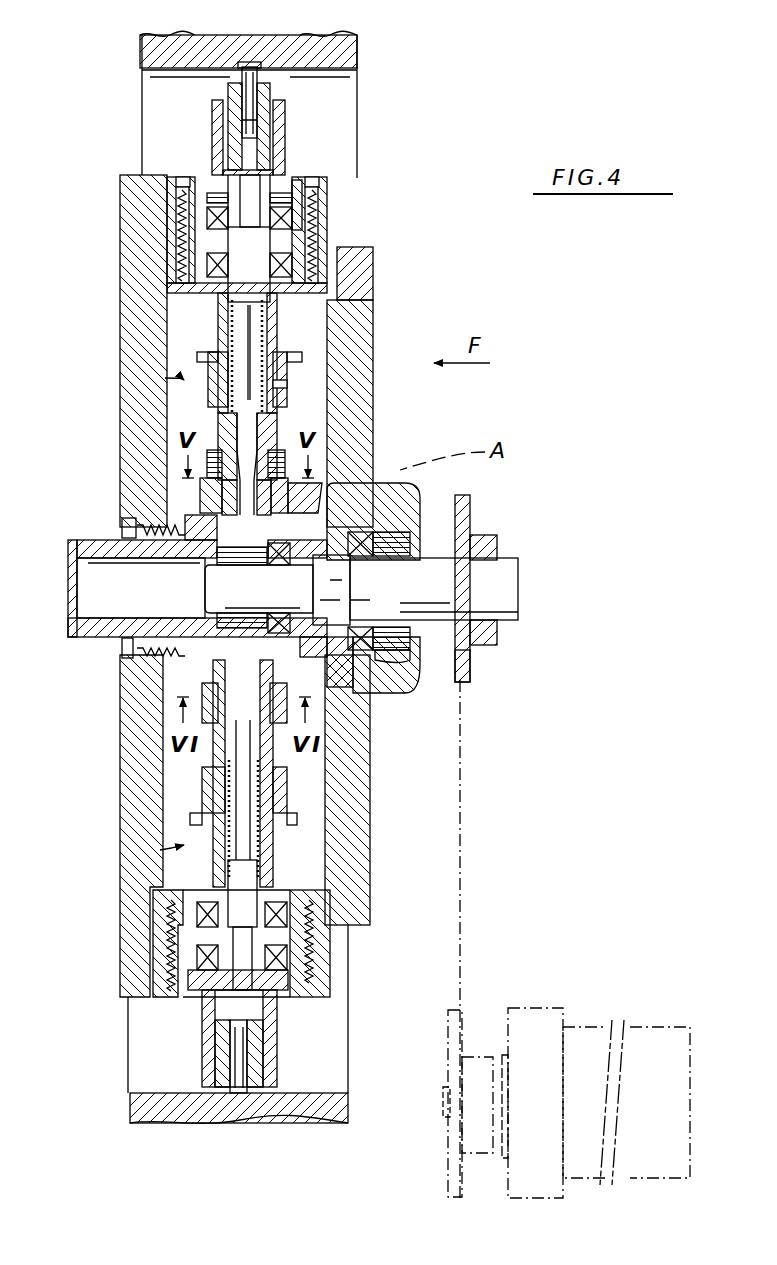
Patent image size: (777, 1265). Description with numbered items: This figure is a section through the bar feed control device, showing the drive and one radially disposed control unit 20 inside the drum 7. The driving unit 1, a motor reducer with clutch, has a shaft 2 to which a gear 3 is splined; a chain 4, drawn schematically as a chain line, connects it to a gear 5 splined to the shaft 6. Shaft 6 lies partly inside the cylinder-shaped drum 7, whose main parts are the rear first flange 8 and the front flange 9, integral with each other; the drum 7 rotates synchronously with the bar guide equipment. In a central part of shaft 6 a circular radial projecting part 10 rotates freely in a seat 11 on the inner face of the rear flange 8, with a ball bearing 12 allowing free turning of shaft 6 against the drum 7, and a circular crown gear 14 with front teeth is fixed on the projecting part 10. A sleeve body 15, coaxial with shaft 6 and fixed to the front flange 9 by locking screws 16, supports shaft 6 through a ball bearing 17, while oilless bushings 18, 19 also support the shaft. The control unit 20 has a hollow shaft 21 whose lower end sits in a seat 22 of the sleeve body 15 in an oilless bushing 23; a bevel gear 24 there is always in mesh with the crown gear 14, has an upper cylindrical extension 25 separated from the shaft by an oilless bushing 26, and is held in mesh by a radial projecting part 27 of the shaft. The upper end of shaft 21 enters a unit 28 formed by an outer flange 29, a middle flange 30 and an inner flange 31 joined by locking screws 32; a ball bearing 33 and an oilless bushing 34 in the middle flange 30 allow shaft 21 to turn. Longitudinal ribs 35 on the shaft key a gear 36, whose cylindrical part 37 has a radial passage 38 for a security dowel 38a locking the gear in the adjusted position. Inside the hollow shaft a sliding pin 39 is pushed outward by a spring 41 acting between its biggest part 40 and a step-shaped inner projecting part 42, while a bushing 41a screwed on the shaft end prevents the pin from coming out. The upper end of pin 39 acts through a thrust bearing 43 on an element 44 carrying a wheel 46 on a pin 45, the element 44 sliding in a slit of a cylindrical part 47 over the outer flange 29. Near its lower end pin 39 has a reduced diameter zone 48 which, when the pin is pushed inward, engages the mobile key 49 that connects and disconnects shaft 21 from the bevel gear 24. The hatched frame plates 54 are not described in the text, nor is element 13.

The driving unit 1 is at (674, 1030).
The shaft 2 is at (443, 1112).
The gear 3 is at (462, 1022).
The chain 4 is at (462, 812).
The gear 5 is at (497, 640).
The shaft 6 is at (518, 596).
The drum 7 is at (385, 330).
The first flange 8 is at (370, 855).
The front flange 9 is at (125, 925).
The circular radial projecting part 10 is at (405, 498).
The seat 11 is at (345, 682).
The ball bearing 12 is at (395, 693).
The bushing 13 is at (385, 692).
The circular crown gear 14 is at (320, 657).
The sleeve body 15 is at (68, 620).
The locking screws 16 is at (140, 655).
The ball bearing 17 is at (270, 620).
The oilless bushing 18 is at (460, 682).
The oilless bushing 19 is at (122, 645).
The control unit 20 is at (165, 378).
The hollow shaft 21 is at (229, 830).
The seat 22 is at (195, 548).
The oilless bushing 23 is at (220, 570).
The bevel gear 24 is at (210, 525).
The upper cylindrical extension 25 is at (205, 500).
The oilless bushing 26 is at (213, 702).
The radial projecting part 27 is at (318, 483).
The unit 28 is at (302, 152).
The outer flange 29 is at (195, 990).
The middle flange 30 is at (337, 272).
The inner flange 31 is at (373, 262).
The locking screws 32 is at (322, 240).
The ball bearing 33 is at (320, 192).
The oilless bushing 34 is at (180, 235).
The longitudinal ribs 35 is at (217, 412).
The gear 36 is at (335, 352).
The cylindrical part 37 is at (212, 812).
The radial passage 38 is at (298, 368).
The security dowel 38a is at (288, 392).
The sliding pin 39 is at (240, 322).
The biggest part 40 is at (240, 275).
The spring 41 is at (218, 382).
The bushing 41a is at (300, 190).
The step-shaped inner projecting part 42 is at (205, 215).
The thrust bearing 43 is at (225, 172).
The element 44 is at (238, 68).
The pin 45 is at (262, 95).
The wheel 46 is at (250, 67).
The cylindrical part 47 is at (212, 115).
The reduced diameter zone 48 is at (215, 690).
The mobile key 49 is at (285, 720).
The frame plate 54 is at (357, 58).